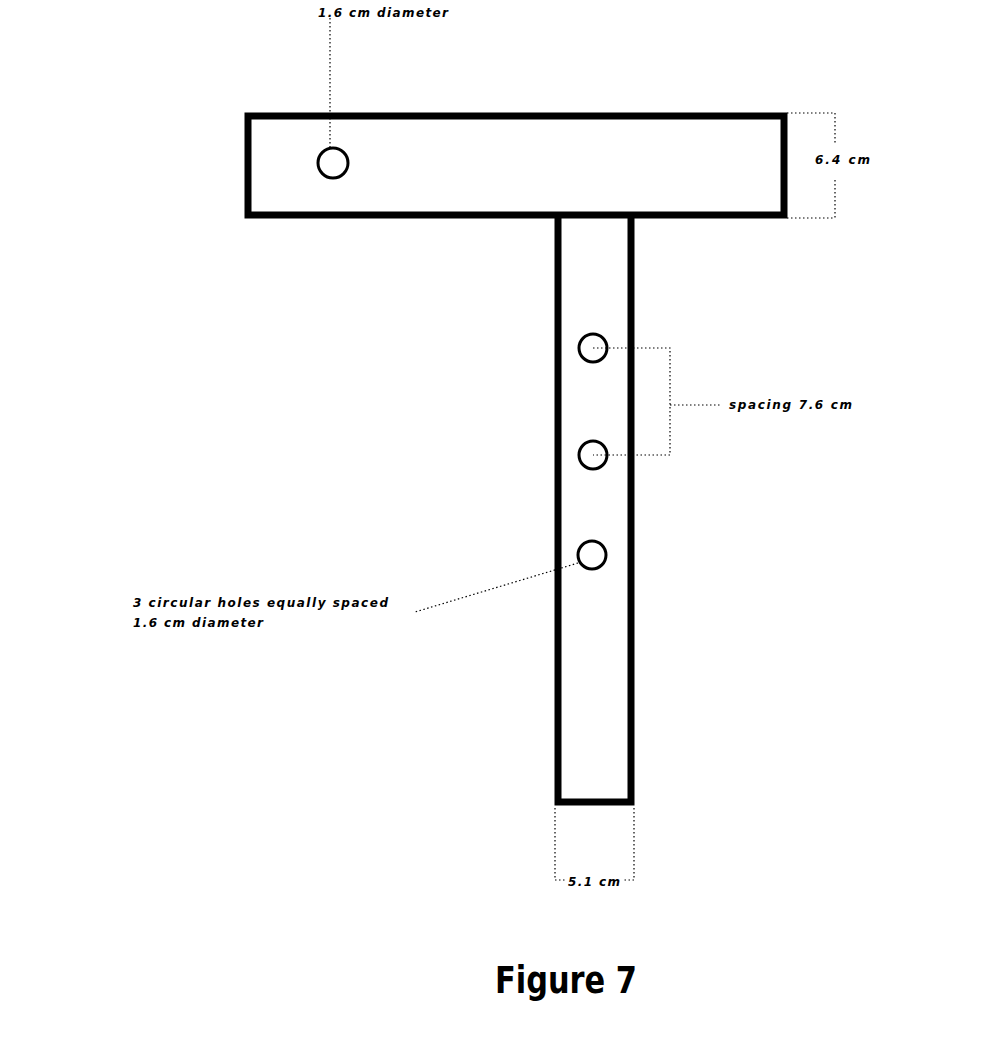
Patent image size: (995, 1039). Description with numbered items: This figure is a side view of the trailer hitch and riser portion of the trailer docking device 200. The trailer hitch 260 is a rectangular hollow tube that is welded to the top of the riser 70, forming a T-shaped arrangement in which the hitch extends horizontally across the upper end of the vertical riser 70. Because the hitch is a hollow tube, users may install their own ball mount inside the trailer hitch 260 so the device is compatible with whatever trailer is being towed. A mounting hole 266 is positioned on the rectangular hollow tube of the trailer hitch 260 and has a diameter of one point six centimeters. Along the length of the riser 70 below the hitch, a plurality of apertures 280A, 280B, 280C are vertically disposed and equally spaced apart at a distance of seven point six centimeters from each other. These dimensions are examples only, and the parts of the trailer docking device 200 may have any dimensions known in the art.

The trailer hitch 260 is at (246, 148).
The mounting hole 266 is at (328, 183).
The riser 70 is at (635, 613).
The aperture 280A is at (578, 346).
The aperture 280B is at (578, 455).
The aperture 280C is at (577, 550).
The trailer docking device 200 is at (303, 682).